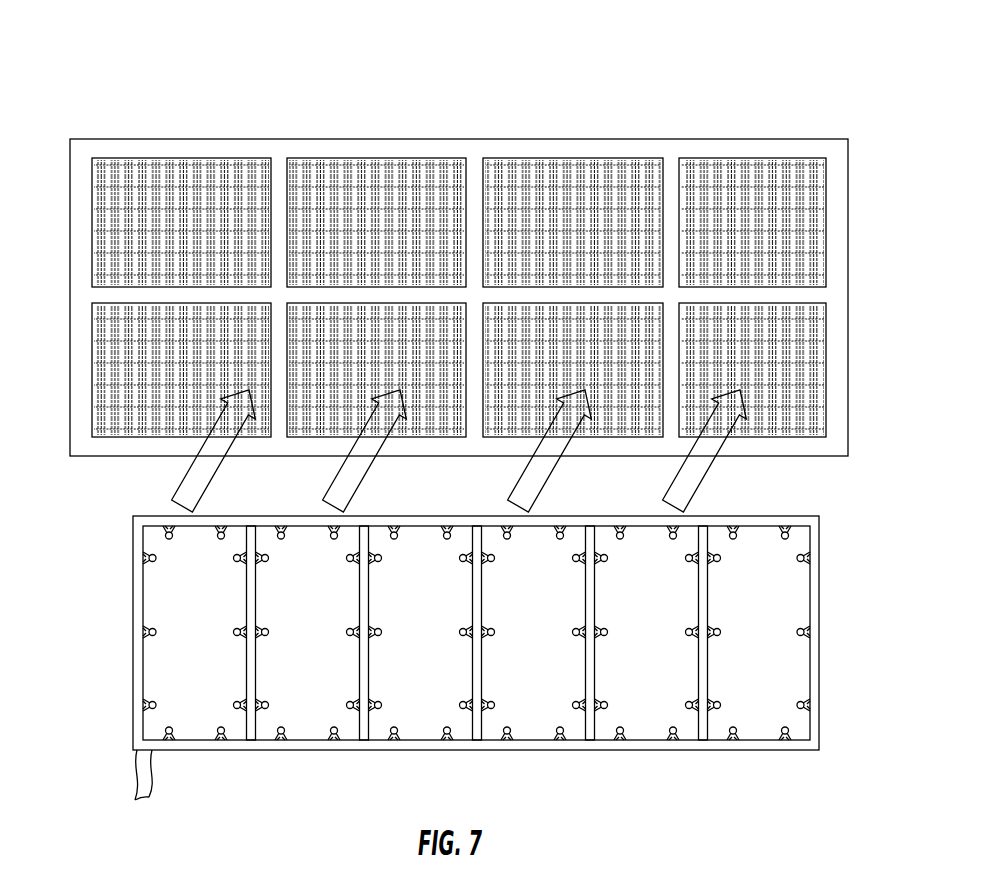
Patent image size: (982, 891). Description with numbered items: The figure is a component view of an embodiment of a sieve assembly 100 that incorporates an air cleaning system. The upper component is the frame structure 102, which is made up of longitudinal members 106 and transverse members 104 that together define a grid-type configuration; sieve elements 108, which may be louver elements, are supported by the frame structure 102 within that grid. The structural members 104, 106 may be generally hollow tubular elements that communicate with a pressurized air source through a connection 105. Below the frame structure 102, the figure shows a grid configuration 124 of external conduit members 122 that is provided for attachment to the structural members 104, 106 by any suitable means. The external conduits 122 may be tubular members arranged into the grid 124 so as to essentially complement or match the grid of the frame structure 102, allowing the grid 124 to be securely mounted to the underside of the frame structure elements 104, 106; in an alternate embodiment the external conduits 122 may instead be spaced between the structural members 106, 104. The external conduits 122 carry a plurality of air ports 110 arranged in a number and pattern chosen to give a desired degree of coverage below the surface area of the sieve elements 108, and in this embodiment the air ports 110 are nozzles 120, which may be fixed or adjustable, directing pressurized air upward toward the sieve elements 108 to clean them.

The sieve assembly 100 is at (612, 52).
The frame structure 102 is at (189, 128).
The transverse members 104 is at (288, 197).
The connection 105 is at (152, 770).
The longitudinal members 106 is at (388, 138).
The sieve elements 108 is at (219, 173).
The air ports 110 is at (286, 624).
The nozzles 120 is at (595, 625).
The external conduit members 122 is at (133, 647).
The grid configuration 124 is at (94, 590).